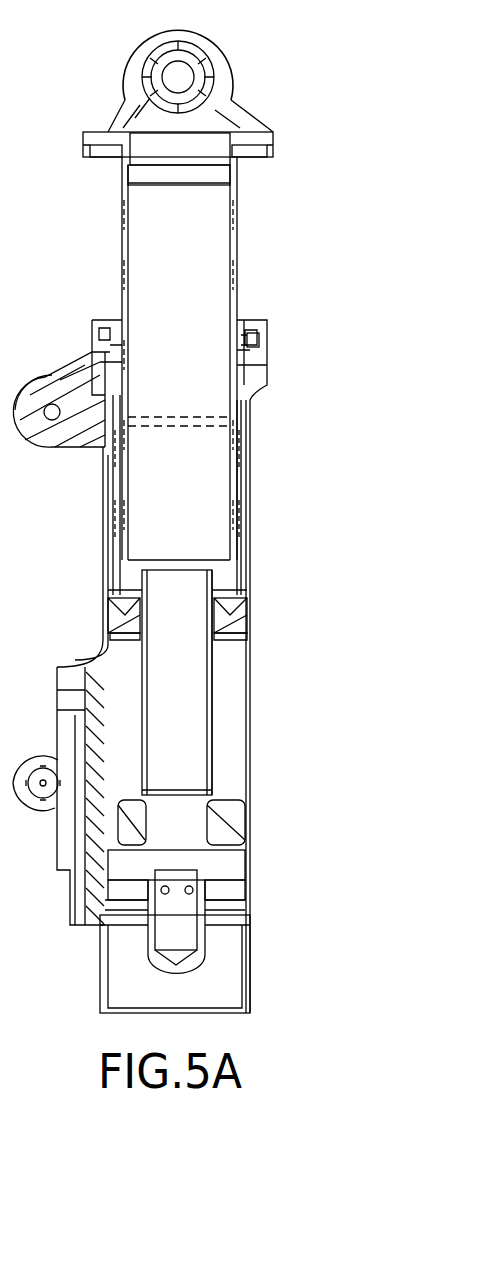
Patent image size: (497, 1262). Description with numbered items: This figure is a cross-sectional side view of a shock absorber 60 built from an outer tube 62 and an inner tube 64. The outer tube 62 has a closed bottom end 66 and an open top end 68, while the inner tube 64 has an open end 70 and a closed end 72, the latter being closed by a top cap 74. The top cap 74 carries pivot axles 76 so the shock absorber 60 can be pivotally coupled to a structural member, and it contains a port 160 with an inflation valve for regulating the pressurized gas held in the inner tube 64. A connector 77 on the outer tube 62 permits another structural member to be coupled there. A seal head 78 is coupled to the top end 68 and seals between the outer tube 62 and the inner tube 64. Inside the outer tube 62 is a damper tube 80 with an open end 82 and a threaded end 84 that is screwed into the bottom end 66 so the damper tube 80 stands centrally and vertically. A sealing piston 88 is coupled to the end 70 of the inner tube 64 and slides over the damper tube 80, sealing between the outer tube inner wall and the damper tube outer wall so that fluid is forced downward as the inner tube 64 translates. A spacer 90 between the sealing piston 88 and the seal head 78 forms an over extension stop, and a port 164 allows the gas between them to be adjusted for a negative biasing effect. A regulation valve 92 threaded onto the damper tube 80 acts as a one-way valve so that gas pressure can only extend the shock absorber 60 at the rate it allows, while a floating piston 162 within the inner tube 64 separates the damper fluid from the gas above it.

The shock absorber 60 is at (275, 275).
The outer tube 62 is at (252, 718).
The inner tube 64 is at (236, 222).
The closed bottom end 66 is at (222, 920).
The open top end 68 is at (240, 312).
The open end 70 is at (225, 597).
The closed end 72 is at (228, 190).
The top cap 74 is at (225, 103).
The pivot axles 76 is at (205, 47).
The connector 77 is at (55, 450).
The seal head 78 is at (248, 355).
The damper tube 80 is at (213, 669).
The open end 82 is at (163, 572).
The threaded end 84 is at (152, 932).
The sealing piston 88 is at (232, 612).
The spacer 90 is at (240, 457).
The regulation valve 92 is at (245, 855).
The port 160 is at (130, 120).
The floating piston 162 is at (162, 415).
The port 164 is at (70, 375).